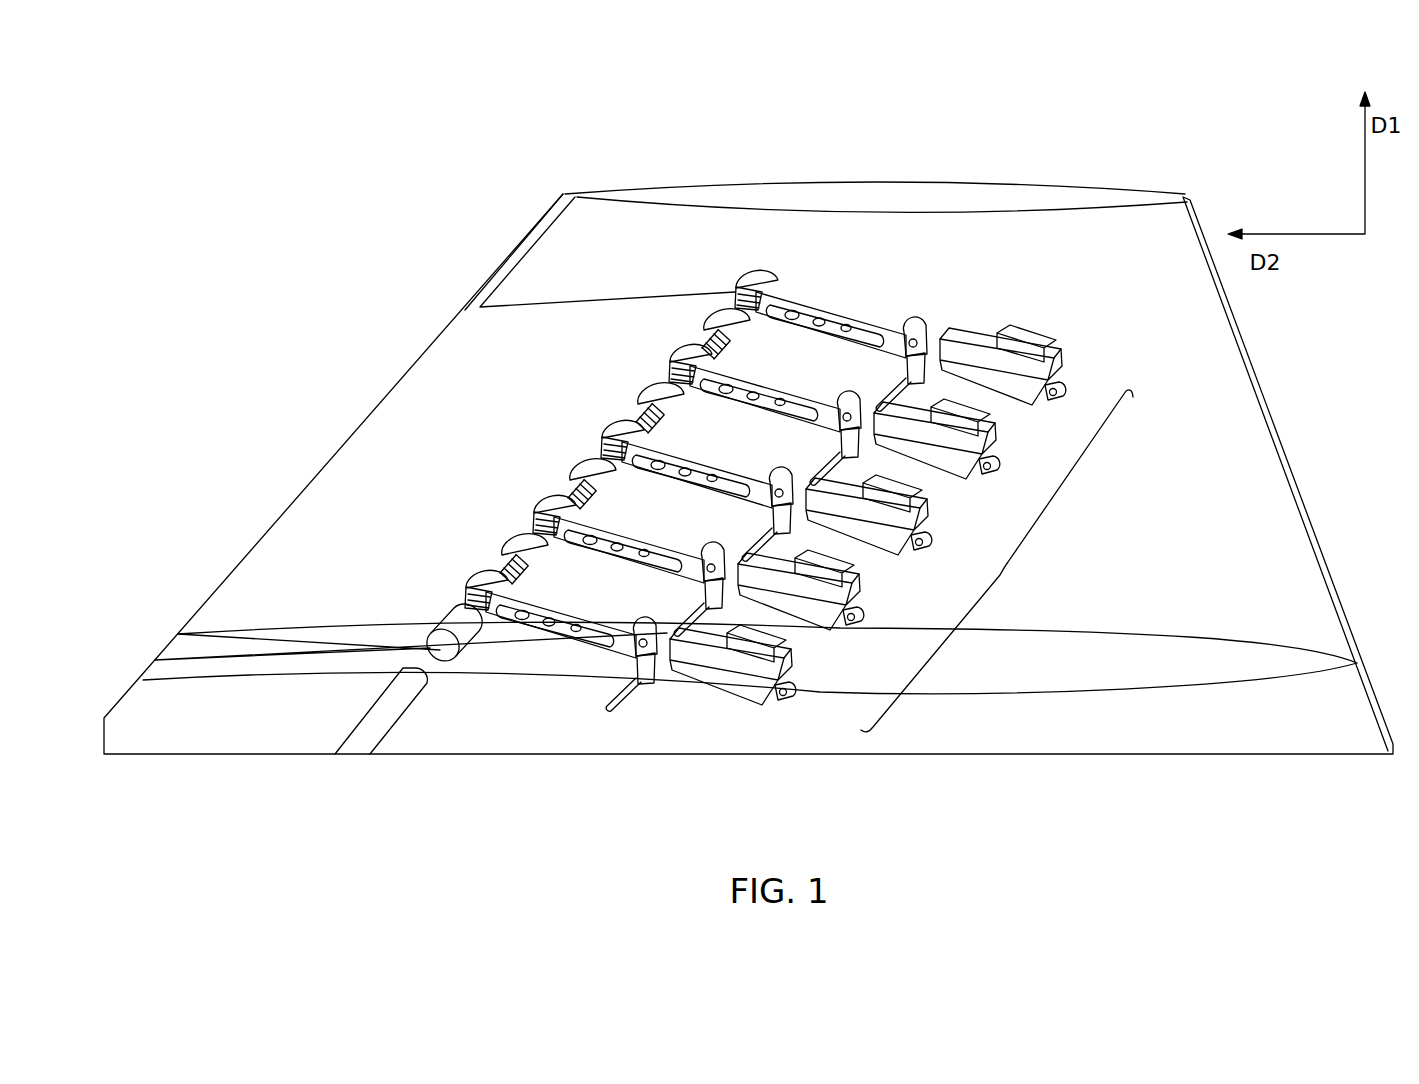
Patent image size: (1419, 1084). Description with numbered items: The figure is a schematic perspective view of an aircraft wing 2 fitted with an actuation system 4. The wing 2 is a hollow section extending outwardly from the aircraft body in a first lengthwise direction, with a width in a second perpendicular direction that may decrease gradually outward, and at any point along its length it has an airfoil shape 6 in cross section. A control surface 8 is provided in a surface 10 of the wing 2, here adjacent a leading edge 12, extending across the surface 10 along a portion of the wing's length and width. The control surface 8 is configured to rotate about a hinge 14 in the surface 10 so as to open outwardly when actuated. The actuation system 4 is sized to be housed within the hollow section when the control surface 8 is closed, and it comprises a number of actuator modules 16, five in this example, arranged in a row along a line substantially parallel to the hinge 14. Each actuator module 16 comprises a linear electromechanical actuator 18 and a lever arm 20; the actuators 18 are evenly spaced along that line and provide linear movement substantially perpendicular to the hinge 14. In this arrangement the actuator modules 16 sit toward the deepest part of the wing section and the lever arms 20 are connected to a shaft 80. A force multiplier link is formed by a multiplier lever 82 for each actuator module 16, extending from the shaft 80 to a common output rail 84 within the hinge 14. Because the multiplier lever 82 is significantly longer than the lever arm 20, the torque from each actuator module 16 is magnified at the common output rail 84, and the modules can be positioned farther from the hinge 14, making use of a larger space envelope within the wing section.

The aircraft wing 2 is at (1253, 352).
The actuation system 4 is at (1008, 571).
The airfoil shape 6 is at (1134, 677).
The control surface 8 is at (283, 553).
The surface 10 is at (593, 232).
The leading edge 12 is at (337, 452).
The hinge 14 is at (633, 398).
The actuator module 16 is at (1083, 327).
The linear electromechanical actuator 18 is at (743, 680).
The lever arm 20 is at (915, 320).
The shaft 80 is at (632, 673).
The multiplier lever 82 is at (522, 627).
The common output rail 84 is at (560, 485).